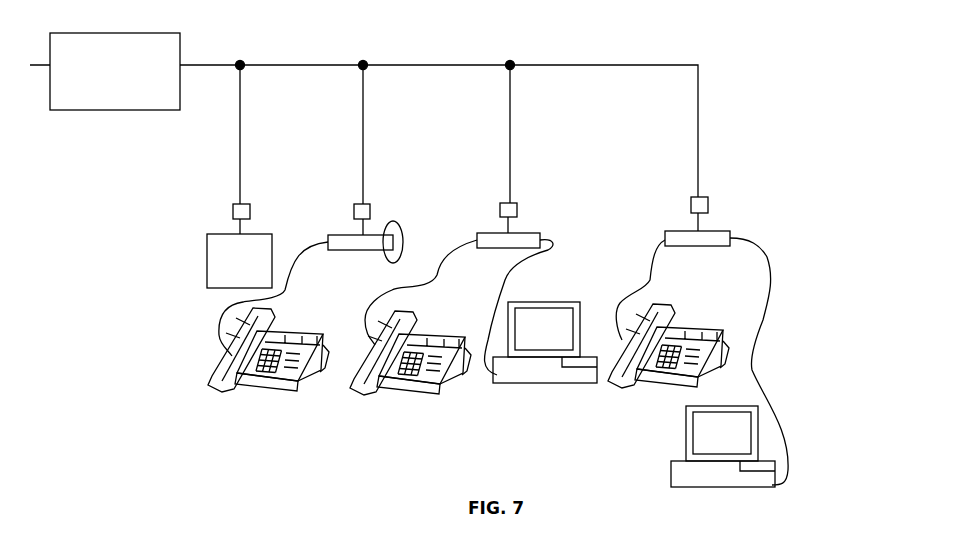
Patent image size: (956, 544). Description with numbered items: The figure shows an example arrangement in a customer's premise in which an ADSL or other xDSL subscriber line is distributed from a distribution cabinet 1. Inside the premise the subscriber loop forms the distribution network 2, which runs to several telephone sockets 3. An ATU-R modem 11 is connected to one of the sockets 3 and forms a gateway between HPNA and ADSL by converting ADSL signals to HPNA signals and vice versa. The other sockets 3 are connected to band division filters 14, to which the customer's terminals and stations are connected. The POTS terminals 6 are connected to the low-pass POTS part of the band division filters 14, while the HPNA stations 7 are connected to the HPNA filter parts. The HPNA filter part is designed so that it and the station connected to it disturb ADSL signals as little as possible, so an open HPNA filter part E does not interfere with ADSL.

The distribution cabinet 1 is at (130, 100).
The distribution network 2 is at (374, 66).
The telephone socket 3 is at (250, 206).
The ATU-R modem 11 is at (225, 284).
The band division filter 14 is at (336, 236).
The open HPNA filter part E is at (400, 227).
The POTS terminal 6 is at (282, 394).
The HPNA station 7 is at (567, 323).